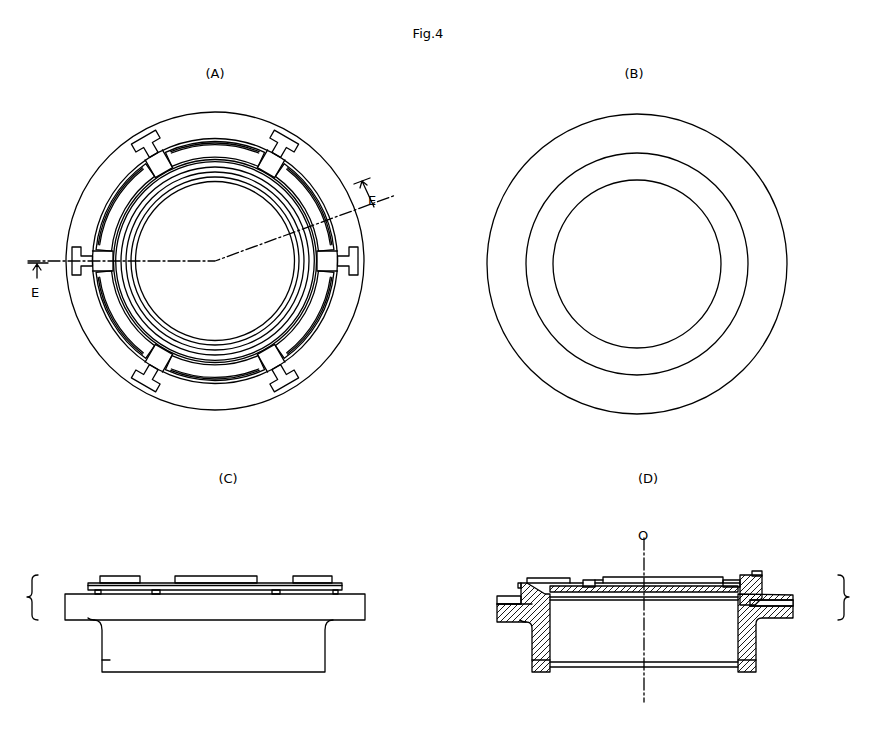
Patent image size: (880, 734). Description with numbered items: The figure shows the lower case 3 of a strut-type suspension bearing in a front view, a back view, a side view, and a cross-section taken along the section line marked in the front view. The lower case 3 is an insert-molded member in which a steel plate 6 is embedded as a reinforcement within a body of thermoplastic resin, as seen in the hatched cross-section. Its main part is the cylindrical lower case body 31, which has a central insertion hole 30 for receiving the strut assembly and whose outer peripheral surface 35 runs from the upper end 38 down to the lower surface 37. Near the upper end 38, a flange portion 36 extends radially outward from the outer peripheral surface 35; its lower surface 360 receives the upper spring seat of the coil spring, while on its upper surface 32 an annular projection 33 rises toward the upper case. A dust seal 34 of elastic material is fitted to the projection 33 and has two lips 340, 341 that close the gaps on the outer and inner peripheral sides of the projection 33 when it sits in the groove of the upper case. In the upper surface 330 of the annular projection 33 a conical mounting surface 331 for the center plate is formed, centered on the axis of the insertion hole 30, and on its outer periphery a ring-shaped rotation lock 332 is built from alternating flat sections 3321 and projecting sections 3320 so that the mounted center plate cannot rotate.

The lower case 3 is at (383, 93).
The steel plate 6 is at (497, 605).
The insertion hole 30 is at (163, 220).
The lower case body 31 is at (330, 160).
The upper surface 32 is at (255, 122).
The annular projection 33 is at (285, 370).
The dust seal 34 is at (359, 263).
The outer peripheral surface 35 is at (101, 655).
The flange portion 36 is at (78, 205).
The lower surface 37 is at (723, 164).
The upper end 38 is at (439, 597).
The upper surface 330 is at (260, 392).
The mounting surface 331 is at (330, 280).
The rotation lock 332 is at (100, 320).
The lip 340 is at (520, 583).
The lip 341 is at (595, 580).
The lower surface 360 is at (90, 621).
The projecting sections 3320 is at (186, 128).
The flat sections 3321 is at (150, 140).